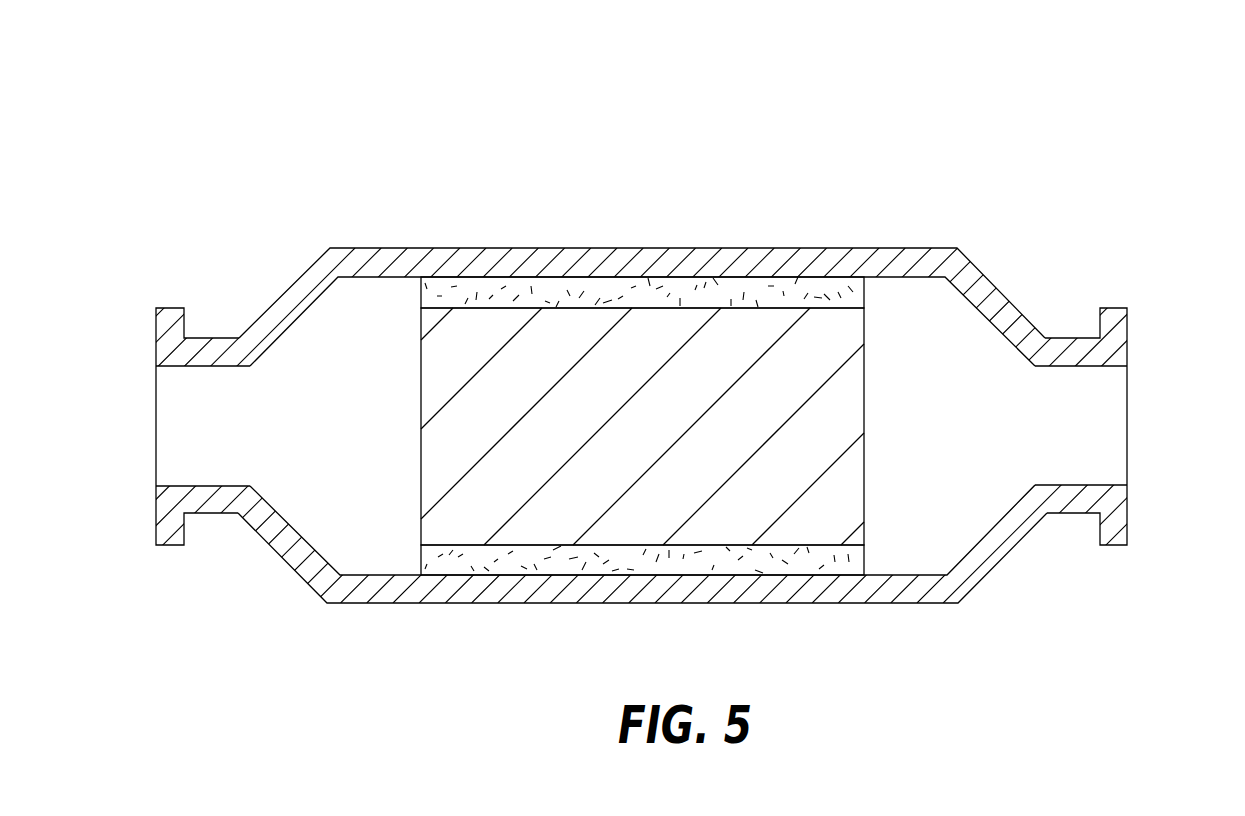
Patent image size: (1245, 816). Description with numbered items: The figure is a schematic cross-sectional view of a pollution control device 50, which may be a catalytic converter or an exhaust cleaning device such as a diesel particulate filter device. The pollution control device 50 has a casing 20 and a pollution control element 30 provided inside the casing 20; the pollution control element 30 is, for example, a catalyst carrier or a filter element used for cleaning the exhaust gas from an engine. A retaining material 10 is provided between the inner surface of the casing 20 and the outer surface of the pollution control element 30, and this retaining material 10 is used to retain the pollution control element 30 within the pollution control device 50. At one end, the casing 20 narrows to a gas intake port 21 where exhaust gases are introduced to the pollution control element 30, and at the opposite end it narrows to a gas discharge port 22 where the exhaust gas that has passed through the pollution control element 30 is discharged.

The retaining material 10 is at (665, 297).
The casing 20 is at (915, 590).
The gas intake port 21 is at (156, 425).
The gas discharge port 22 is at (1127, 423).
The pollution control element 30 is at (837, 420).
The pollution control device 50 is at (996, 110).